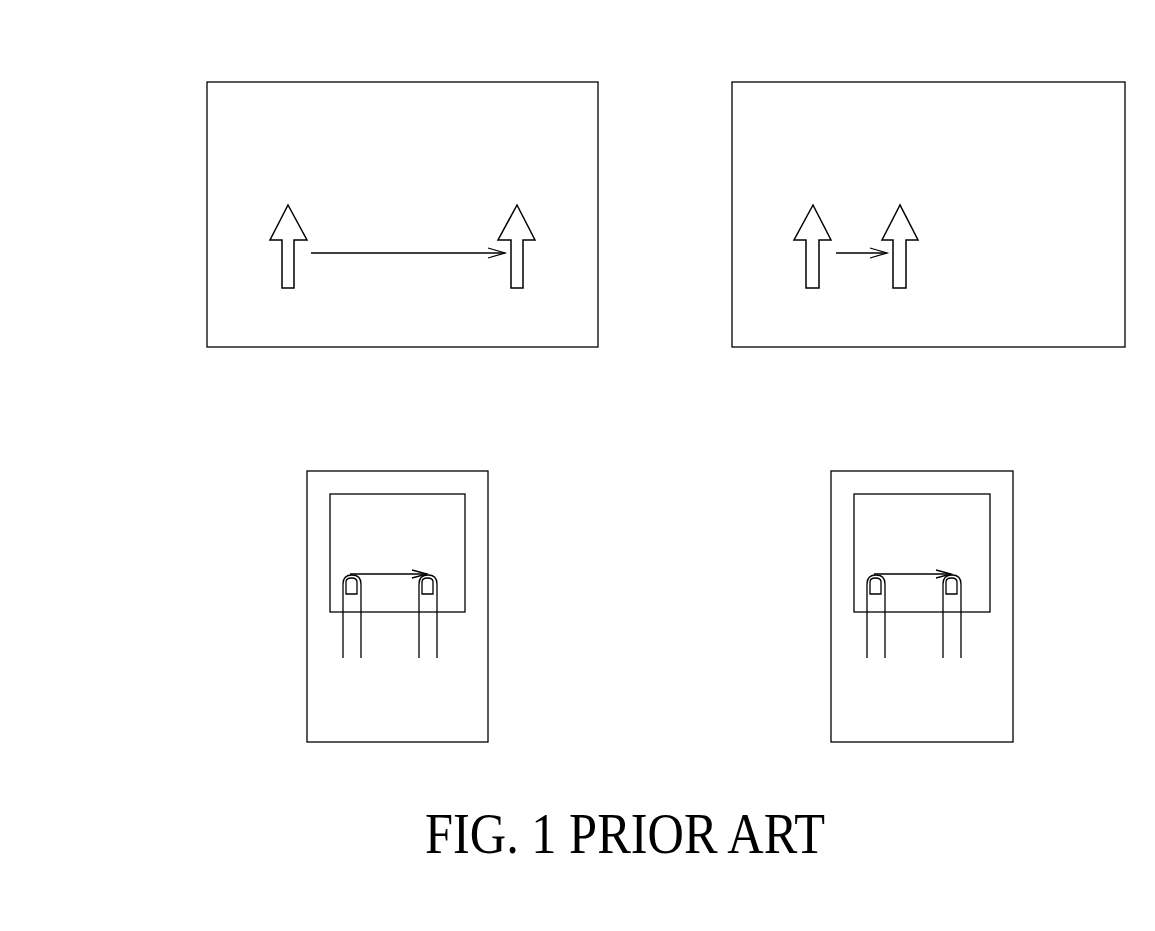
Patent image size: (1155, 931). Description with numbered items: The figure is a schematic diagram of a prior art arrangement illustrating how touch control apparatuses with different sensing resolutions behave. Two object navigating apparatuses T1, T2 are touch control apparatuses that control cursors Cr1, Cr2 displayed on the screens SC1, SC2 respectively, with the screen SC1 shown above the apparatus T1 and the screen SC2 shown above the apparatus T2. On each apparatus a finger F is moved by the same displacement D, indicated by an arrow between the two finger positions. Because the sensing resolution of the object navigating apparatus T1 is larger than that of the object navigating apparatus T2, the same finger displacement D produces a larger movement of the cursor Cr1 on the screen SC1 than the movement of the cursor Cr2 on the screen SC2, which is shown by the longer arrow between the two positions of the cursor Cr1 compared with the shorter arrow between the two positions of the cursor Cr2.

The screen SC1 is at (530, 82).
The screen SC2 is at (1053, 82).
The cursor Cr1 is at (292, 215).
The cursor Cr2 is at (817, 215).
The object navigating apparatus T1 is at (453, 471).
The object navigating apparatus T2 is at (977, 471).
The finger F is at (350, 640).
The displacement D is at (650, 560).